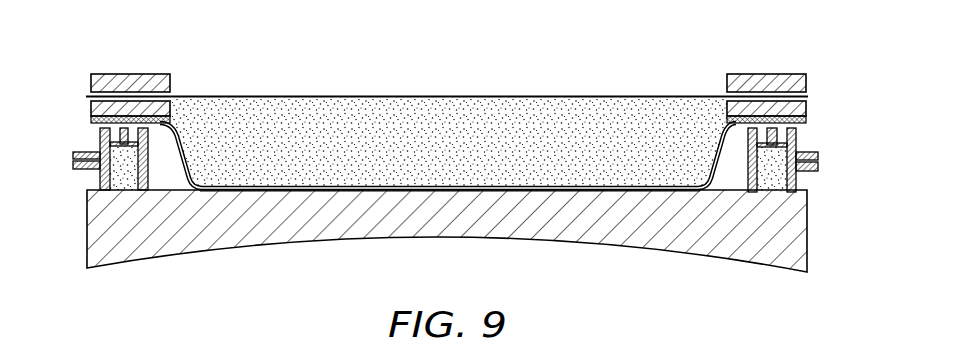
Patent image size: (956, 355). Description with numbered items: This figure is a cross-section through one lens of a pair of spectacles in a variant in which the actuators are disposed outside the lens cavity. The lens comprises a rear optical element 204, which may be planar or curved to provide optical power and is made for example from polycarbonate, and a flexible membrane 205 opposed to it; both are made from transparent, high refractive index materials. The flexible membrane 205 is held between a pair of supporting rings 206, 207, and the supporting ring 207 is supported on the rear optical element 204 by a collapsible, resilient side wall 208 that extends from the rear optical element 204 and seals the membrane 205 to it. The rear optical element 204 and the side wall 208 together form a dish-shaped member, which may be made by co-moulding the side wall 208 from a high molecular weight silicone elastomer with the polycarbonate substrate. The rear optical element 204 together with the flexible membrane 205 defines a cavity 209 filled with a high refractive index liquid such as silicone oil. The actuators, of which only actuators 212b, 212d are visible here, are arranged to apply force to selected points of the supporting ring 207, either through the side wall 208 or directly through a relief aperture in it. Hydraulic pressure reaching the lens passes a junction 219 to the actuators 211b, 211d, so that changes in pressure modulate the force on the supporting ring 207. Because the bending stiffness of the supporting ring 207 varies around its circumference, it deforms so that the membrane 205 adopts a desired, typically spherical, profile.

The rear optical element 204 is at (368, 238).
The flexible membrane 205 is at (357, 95).
The supporting ring 206 is at (128, 73).
The supporting ring 207 is at (90, 106).
The side wall 208 is at (184, 172).
The cavity 209 is at (535, 105).
The actuator 211d is at (114, 178).
The actuator 211b is at (773, 183).
The actuator 212d is at (97, 170).
The actuator 212b is at (800, 177).
The junction 219 is at (448, 192).